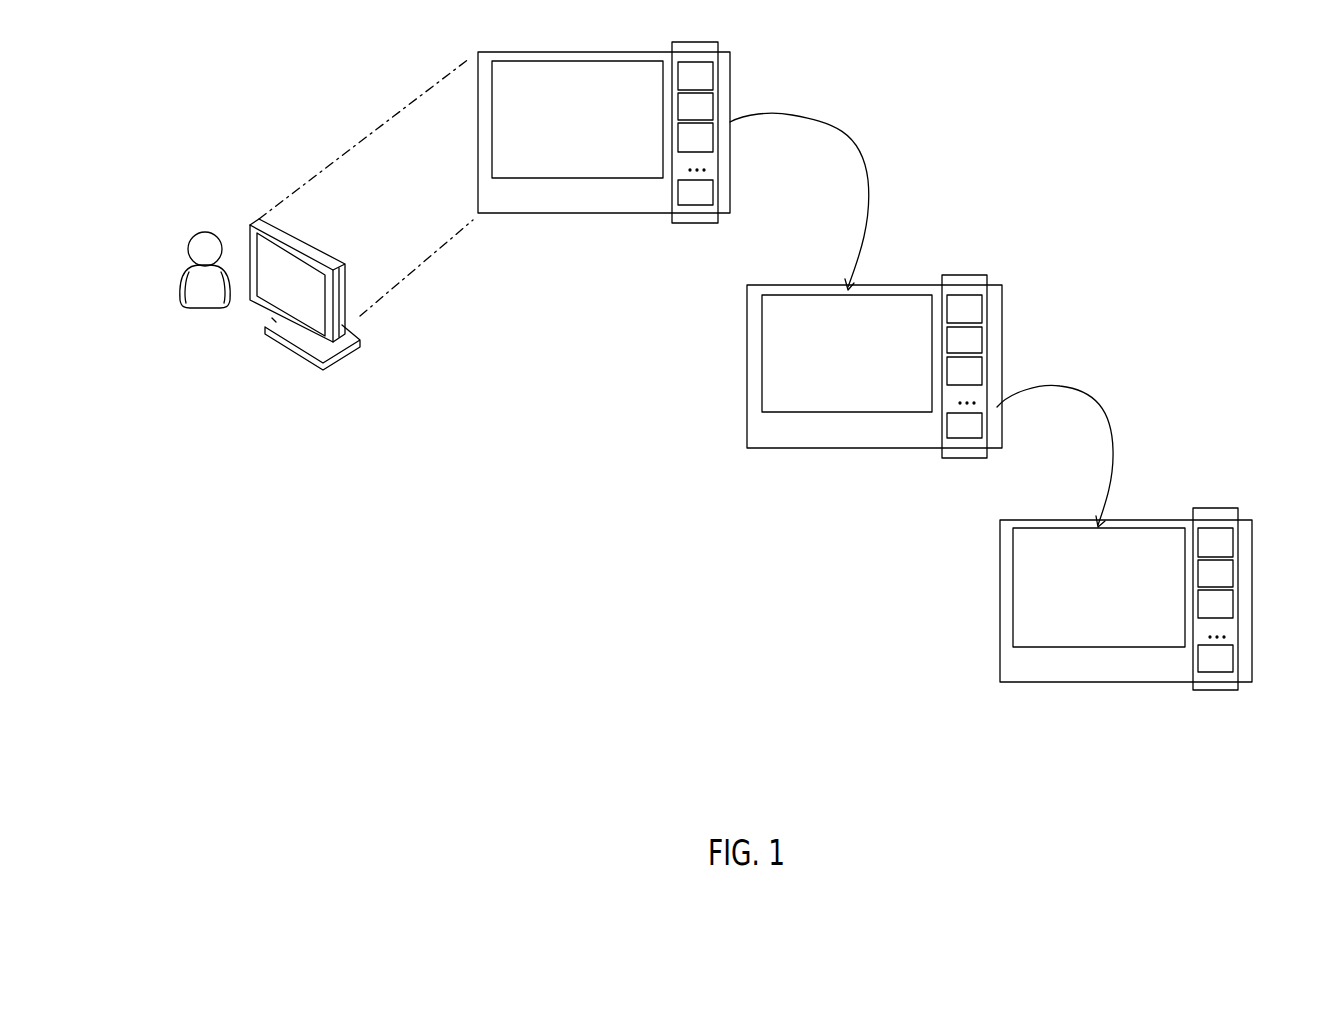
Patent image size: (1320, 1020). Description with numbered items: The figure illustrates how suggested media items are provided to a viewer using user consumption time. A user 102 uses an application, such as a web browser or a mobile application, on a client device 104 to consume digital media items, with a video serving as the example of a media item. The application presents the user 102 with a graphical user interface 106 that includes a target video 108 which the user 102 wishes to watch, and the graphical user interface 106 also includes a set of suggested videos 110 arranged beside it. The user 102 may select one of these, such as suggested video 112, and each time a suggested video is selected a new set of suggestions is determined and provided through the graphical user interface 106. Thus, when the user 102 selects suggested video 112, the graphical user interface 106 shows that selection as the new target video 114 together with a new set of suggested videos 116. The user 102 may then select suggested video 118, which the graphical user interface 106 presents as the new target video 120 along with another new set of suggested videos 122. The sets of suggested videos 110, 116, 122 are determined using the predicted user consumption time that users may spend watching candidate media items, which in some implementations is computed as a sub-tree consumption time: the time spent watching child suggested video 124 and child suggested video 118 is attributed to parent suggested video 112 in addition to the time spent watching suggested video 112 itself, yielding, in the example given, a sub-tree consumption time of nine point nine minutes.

The user 102 is at (199, 257).
The client device 104 is at (264, 324).
The graphical user interface 106 is at (550, 213).
The target video 108 is at (602, 52).
The set of suggested videos 110 is at (718, 43).
The suggested video 112 is at (693, 137).
The new target video 114 is at (868, 295).
The new set of suggested videos 116 is at (988, 273).
The suggested video 118 is at (963, 425).
The new target video 120 is at (1097, 525).
The another new set of suggested videos 122 is at (1238, 507).
The child suggested video 124 is at (1238, 593).